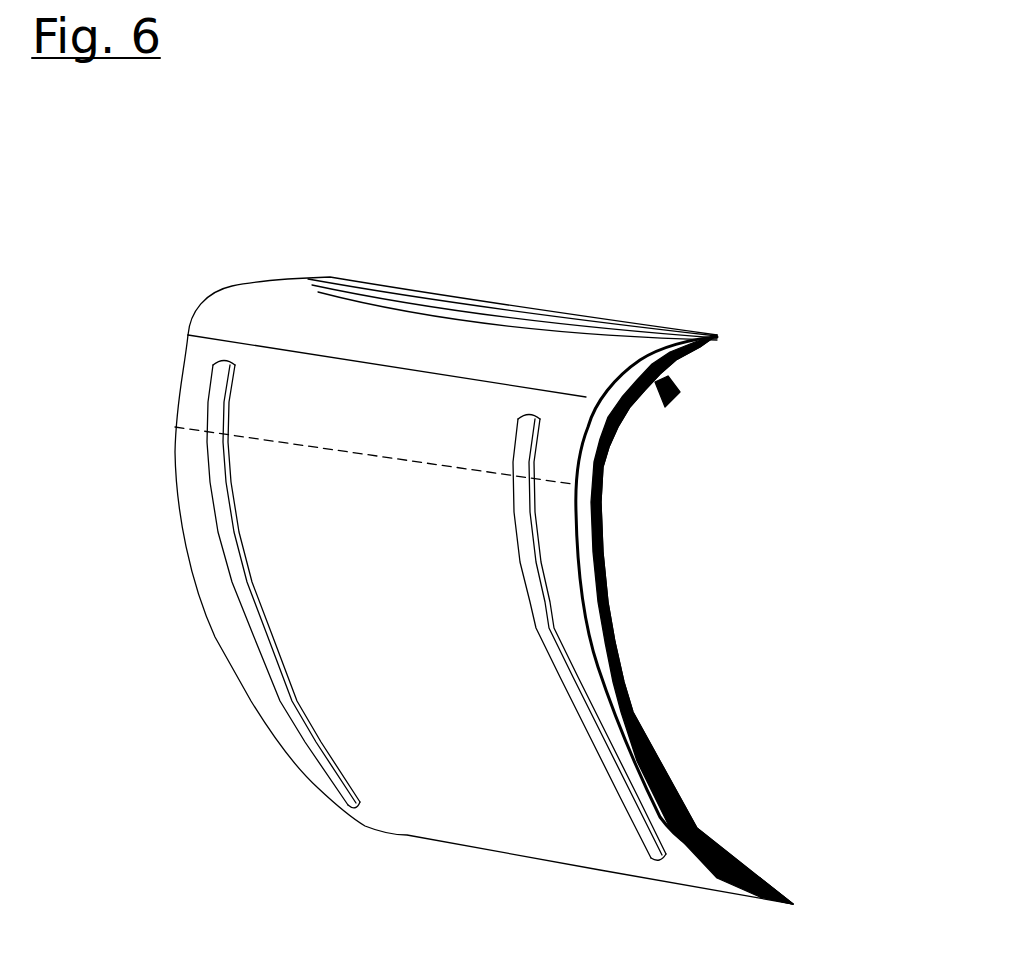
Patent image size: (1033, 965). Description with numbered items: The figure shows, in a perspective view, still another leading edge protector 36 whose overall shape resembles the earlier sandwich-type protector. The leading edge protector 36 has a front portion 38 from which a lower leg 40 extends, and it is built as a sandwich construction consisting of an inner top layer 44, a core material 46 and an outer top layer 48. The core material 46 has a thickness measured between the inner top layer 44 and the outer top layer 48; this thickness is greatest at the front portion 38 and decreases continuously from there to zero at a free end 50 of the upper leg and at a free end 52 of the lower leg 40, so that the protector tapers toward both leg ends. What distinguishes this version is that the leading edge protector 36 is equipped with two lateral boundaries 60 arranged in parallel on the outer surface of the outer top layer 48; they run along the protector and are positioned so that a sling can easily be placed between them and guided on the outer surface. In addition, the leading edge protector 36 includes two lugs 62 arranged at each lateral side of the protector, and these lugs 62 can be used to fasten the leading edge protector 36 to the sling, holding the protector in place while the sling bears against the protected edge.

The leading edge protector 36 is at (823, 518).
The front portion 38 is at (233, 255).
The lower leg 40 is at (363, 693).
The inner top layer 44 is at (610, 450).
The core material 46 is at (587, 526).
The outer top layer 48 is at (587, 653).
The free end of the upper leg 50 is at (737, 332).
The free end of the lower leg 52 is at (793, 903).
The lateral boundaries 60 is at (225, 542).
The lugs 62 is at (668, 390).